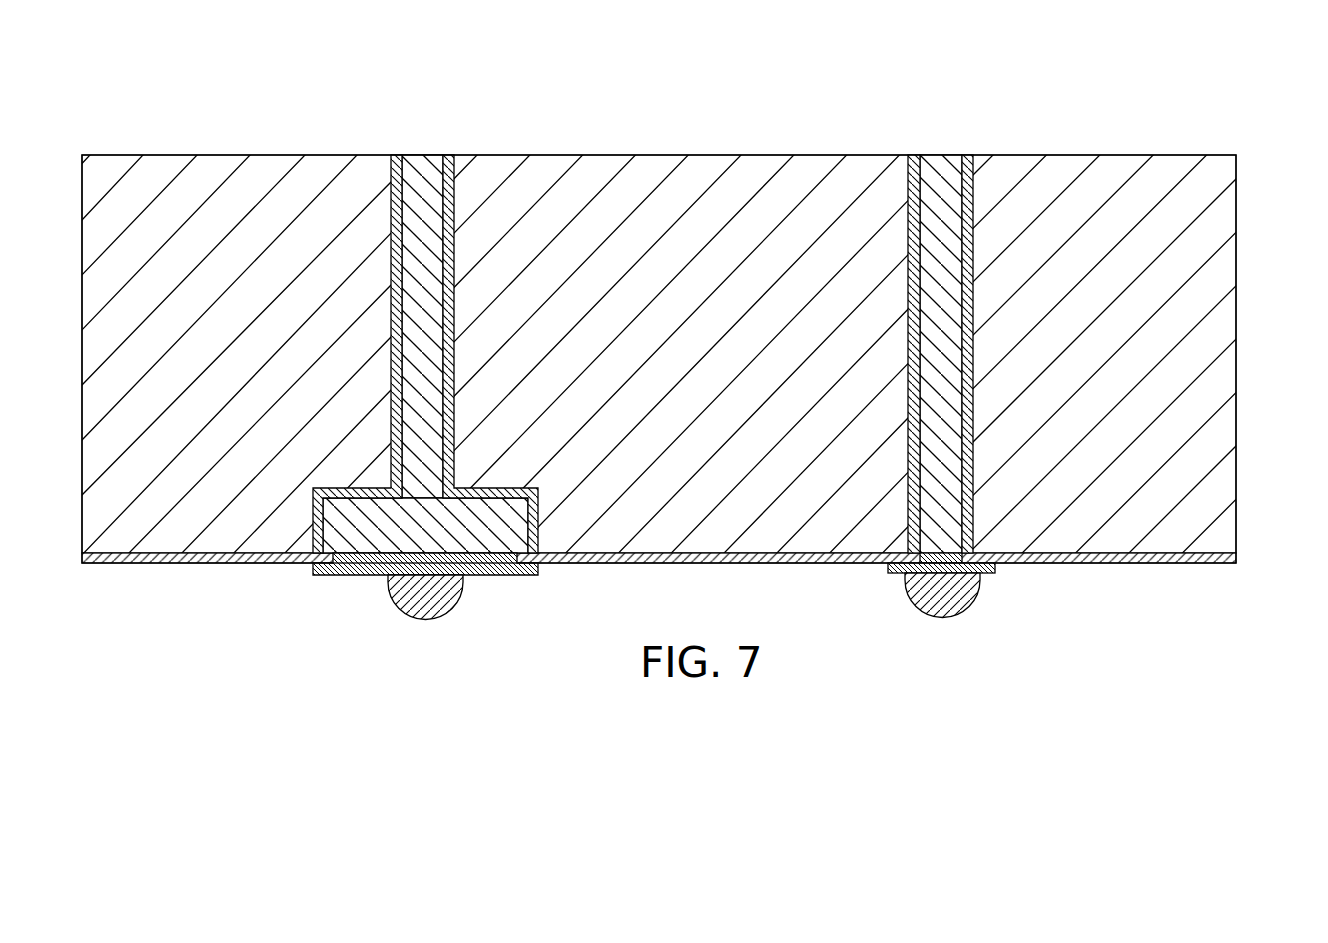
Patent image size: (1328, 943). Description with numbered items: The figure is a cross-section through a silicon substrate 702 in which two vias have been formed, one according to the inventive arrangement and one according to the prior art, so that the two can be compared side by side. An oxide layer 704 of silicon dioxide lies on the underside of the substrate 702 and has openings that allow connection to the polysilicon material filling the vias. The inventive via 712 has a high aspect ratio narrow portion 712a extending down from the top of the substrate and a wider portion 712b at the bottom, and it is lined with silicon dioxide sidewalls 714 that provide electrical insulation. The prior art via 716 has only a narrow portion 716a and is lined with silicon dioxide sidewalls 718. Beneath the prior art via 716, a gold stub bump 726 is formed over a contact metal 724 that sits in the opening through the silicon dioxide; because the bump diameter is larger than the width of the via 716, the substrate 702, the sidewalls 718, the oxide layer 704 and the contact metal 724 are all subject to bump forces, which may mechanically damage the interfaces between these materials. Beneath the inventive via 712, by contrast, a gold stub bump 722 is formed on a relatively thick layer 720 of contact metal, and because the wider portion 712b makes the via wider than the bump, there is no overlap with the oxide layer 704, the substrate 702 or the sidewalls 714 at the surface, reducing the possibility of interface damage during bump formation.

The substrate 702 is at (1238, 349).
The oxide layer 704 is at (208, 565).
The via 712 is at (425, 360).
The narrow portion 712a is at (425, 155).
The wider portion 712b is at (497, 510).
The silicon dioxide sidewalls 714 is at (391, 330).
The via 716 is at (943, 358).
The narrow portion 716a is at (941, 155).
The silicon dioxide sidewalls 718 is at (908, 345).
The layer of contact metal 720 is at (492, 577).
The gold stub bump 722 is at (432, 618).
The contact metal 724 is at (893, 575).
The gold stub bump 726 is at (964, 612).